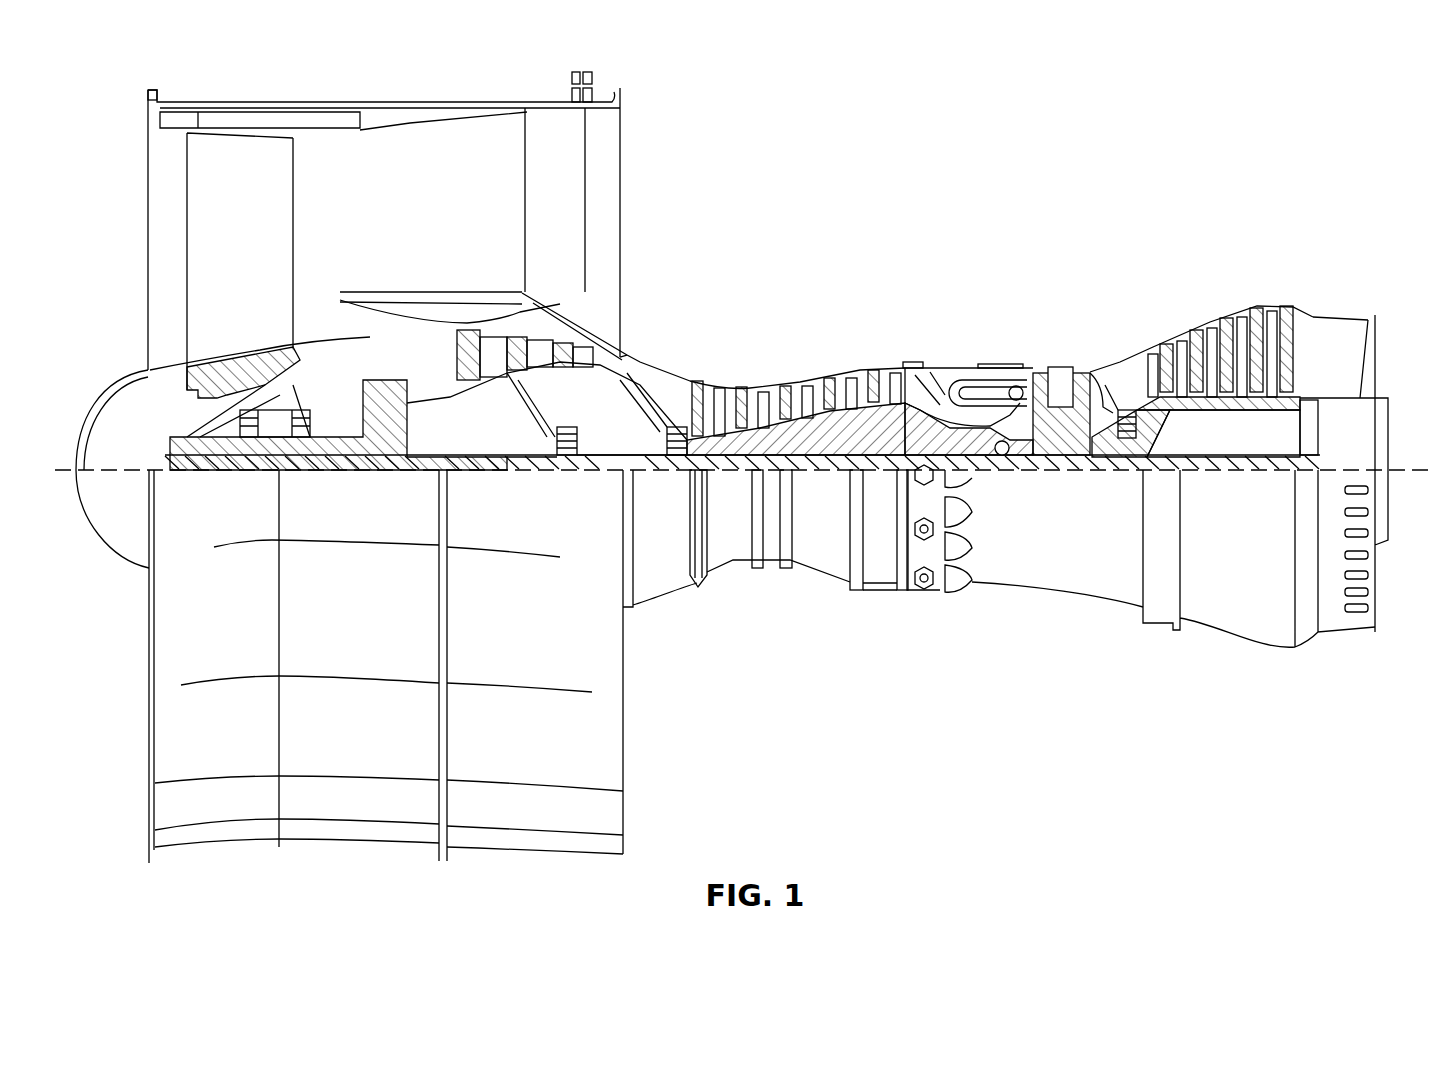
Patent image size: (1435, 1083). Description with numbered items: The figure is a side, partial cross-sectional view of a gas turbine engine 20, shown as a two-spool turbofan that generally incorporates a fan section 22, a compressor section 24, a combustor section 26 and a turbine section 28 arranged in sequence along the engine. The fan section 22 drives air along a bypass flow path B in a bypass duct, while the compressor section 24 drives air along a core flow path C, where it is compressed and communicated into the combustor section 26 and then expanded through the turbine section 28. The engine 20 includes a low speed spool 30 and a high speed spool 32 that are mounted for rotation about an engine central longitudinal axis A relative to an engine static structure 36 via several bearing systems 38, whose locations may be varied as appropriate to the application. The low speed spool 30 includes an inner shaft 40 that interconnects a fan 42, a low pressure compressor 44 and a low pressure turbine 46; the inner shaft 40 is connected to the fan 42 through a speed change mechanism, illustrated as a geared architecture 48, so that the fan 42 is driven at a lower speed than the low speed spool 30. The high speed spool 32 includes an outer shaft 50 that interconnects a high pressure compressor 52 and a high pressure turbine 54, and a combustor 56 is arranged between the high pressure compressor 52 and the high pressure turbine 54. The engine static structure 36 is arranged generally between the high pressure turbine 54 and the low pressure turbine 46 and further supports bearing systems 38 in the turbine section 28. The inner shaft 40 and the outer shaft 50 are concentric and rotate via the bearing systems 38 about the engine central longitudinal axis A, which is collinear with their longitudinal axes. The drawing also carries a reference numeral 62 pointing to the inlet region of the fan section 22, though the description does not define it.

The gas turbine engine 20 is at (1199, 139).
The fan section 22 is at (147, 84).
The compressor section 24 is at (813, 325).
The combustor section 26 is at (977, 324).
The turbine section 28 is at (1128, 308).
The low speed spool 30 is at (841, 477).
The high speed spool 32 is at (910, 400).
The engine static structure 36 is at (884, 587).
The bearing systems 38 is at (250, 437).
The inner shaft 40 is at (636, 468).
The fan 42 is at (236, 226).
The low pressure compressor 44 is at (540, 350).
The low pressure turbine 46 is at (1227, 327).
The geared architecture 48 is at (388, 437).
The outer shaft 50 is at (1008, 455).
The high pressure compressor 52 is at (797, 440).
The high pressure turbine 54 is at (1063, 363).
The combustor 56 is at (987, 390).
The bypass flow path 62 is at (161, 132).
The engine central longitudinal axis A is at (1399, 464).
The bypass flow path B is at (472, 200).
The core flow path C is at (342, 332).